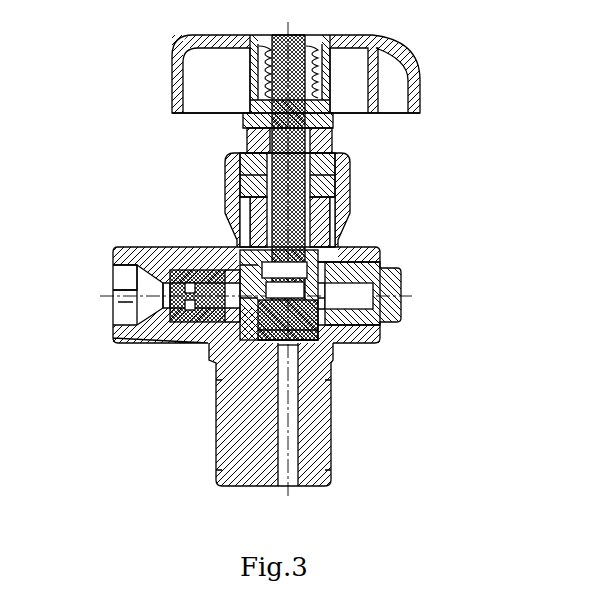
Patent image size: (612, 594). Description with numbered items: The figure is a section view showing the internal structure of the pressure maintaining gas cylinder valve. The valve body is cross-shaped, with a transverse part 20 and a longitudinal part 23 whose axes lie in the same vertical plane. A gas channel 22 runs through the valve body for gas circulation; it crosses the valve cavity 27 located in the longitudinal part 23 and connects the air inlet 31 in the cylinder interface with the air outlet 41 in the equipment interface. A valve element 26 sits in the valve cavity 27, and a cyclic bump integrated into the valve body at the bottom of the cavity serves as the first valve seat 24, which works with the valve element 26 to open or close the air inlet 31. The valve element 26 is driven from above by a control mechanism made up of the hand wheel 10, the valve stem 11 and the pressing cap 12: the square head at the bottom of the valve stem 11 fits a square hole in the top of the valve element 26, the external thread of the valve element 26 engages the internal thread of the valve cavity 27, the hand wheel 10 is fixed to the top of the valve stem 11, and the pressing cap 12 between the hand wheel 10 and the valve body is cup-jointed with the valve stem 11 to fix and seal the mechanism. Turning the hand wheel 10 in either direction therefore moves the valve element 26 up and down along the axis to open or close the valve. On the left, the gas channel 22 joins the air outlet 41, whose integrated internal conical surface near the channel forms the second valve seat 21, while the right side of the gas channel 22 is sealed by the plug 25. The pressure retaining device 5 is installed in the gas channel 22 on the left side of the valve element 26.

The hand wheel 10 is at (482, 55).
The valve stem 11 is at (482, 126).
The pressing cap 12 is at (482, 166).
The valve cavity 27 is at (482, 204).
The valve element 26 is at (482, 241).
The plug 25 is at (482, 293).
The first valve seat 24 is at (482, 397).
The air inlet 31 is at (482, 462).
The transverse part 20 is at (79, 192).
The pressure retaining device 5 is at (74, 234).
The air outlet 41 is at (79, 271).
The second valve seat 21 is at (79, 382).
The gas channel 22 is at (79, 430).
The longitudinal part 23 is at (79, 475).